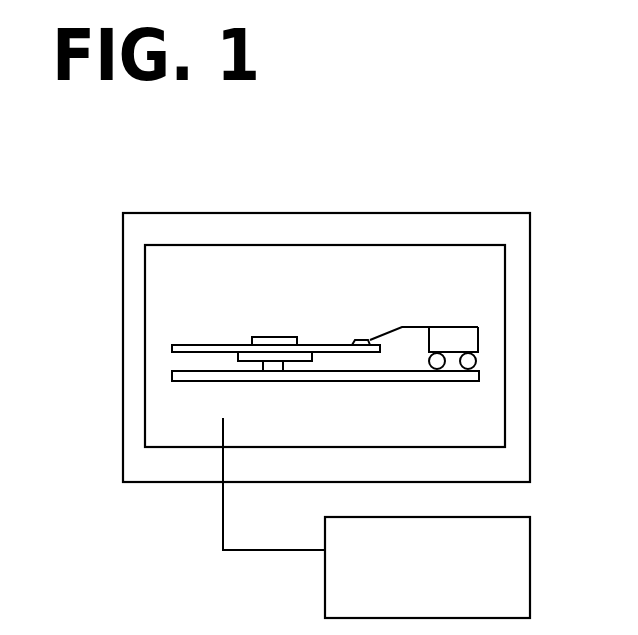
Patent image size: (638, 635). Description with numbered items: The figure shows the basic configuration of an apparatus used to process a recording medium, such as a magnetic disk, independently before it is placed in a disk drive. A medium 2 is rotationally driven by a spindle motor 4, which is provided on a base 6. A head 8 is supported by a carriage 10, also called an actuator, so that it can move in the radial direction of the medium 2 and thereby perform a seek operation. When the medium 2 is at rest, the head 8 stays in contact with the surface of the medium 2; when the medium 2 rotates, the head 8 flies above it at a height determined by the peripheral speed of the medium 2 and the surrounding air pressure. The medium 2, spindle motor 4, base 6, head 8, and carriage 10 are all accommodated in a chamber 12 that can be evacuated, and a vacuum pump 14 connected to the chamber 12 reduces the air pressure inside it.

The medium 2 is at (197, 345).
The spindle motor 4 is at (272, 337).
The base 6 is at (337, 382).
The head 8 is at (357, 340).
The carriage 10 is at (452, 327).
The chamber 12 is at (256, 213).
The vacuum pump 14 is at (530, 563).